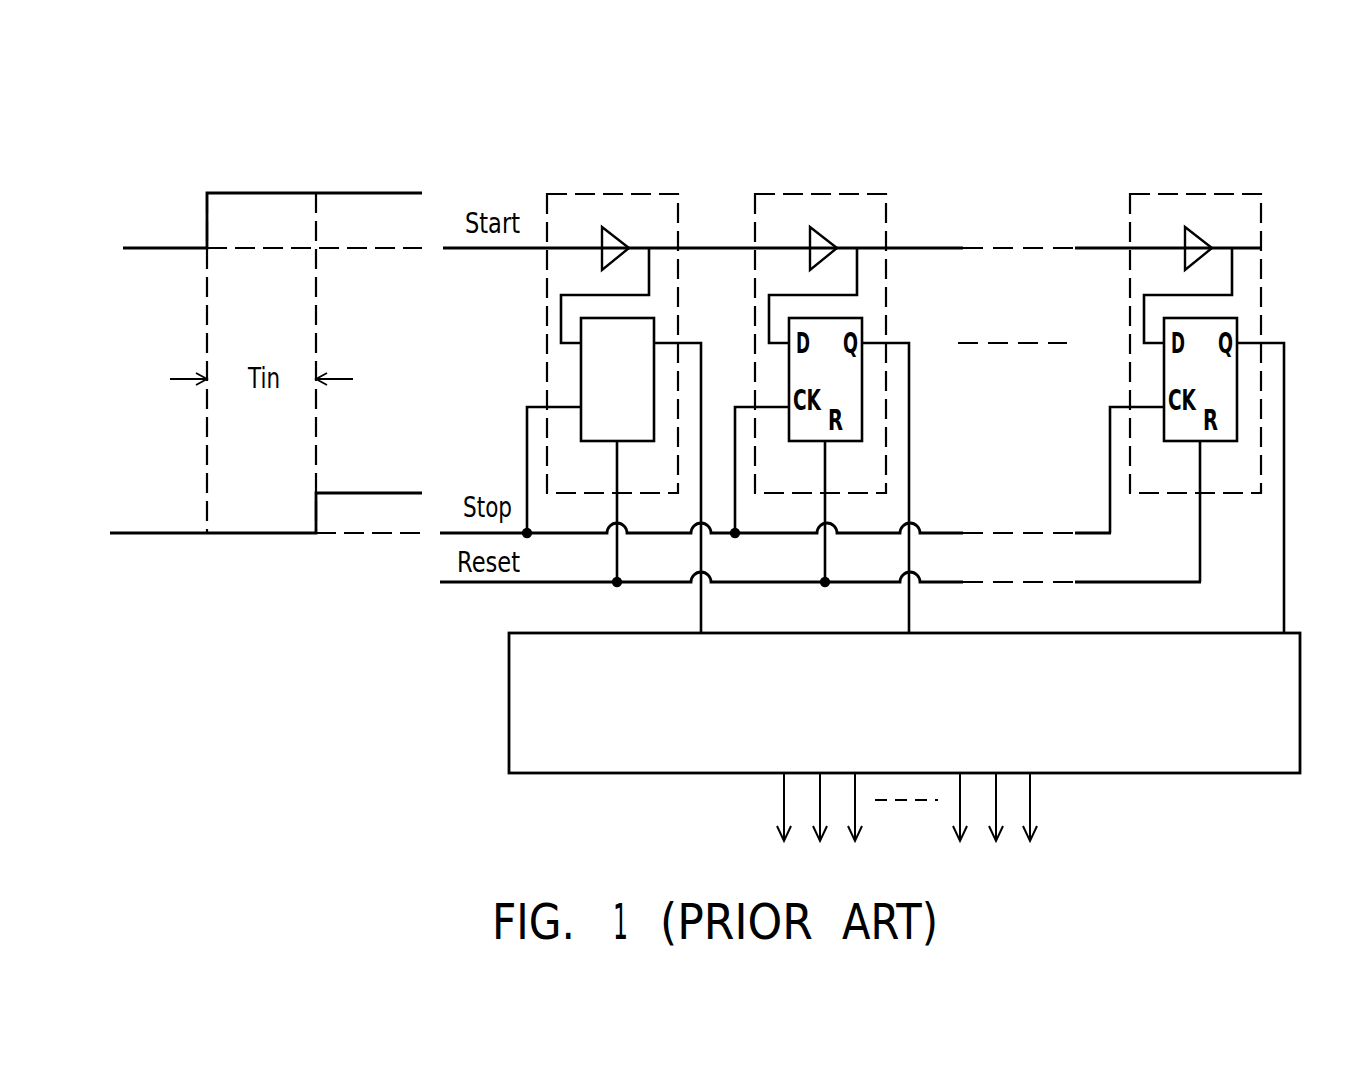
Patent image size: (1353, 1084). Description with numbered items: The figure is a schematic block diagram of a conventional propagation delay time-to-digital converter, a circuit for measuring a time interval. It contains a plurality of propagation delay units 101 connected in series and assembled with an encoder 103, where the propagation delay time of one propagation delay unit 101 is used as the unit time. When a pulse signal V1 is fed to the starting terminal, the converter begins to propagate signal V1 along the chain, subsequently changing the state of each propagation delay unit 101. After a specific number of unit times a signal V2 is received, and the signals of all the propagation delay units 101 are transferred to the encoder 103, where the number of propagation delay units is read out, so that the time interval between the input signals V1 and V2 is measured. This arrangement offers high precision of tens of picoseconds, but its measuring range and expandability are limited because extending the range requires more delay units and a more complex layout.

The propagation delay unit 101 is at (607, 194).
The encoder 103 is at (1189, 773).
The pulse signal V1 is at (263, 220).
The stop signal V2 is at (263, 512).